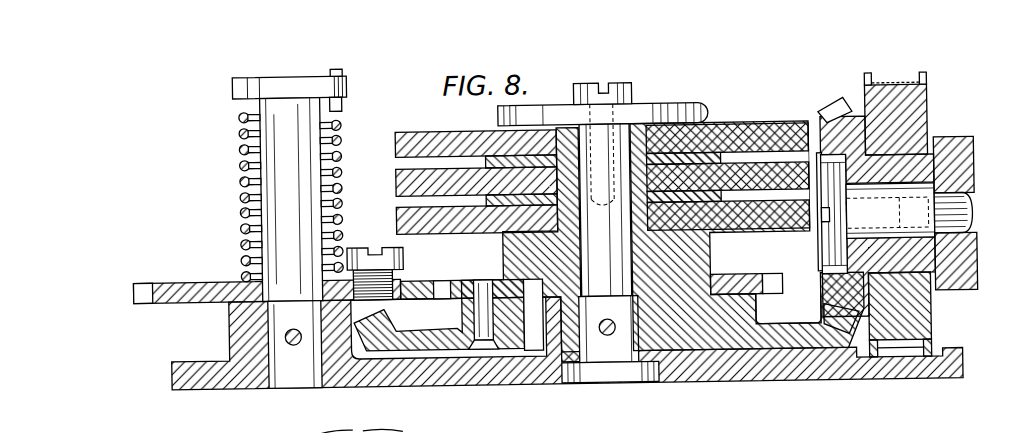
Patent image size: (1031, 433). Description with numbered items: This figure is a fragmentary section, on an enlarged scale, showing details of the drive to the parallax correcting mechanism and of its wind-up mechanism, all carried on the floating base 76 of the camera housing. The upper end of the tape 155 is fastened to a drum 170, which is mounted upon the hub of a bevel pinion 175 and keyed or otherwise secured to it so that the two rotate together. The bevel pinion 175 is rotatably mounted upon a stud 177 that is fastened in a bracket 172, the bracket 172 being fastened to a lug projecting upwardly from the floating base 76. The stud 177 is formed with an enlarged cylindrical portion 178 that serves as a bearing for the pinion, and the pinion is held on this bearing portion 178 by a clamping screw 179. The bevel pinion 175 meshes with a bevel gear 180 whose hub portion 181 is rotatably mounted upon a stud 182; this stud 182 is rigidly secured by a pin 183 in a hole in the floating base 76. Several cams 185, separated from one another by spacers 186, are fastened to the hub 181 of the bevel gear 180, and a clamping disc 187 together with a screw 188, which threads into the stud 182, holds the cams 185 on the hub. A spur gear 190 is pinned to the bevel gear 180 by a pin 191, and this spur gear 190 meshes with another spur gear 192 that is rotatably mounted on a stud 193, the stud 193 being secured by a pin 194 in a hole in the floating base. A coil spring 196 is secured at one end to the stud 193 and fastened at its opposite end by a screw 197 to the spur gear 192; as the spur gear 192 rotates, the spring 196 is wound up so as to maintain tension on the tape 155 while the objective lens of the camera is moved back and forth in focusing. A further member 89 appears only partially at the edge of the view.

The floating base 76 is at (724, 375).
The member (partially shown) 89 is at (389, 428).
The tape 155 is at (893, 87).
The drum 170 is at (912, 116).
The bracket 172 is at (963, 156).
The bevel pinion 175 is at (830, 116).
The stud 177 is at (960, 219).
The enlarged cylindrical portion 178 is at (902, 193).
The clamping screw 179 is at (832, 250).
The bevel gear 180 is at (796, 339).
The hub portion 181 is at (693, 258).
The stud 182 is at (596, 247).
The pin 183 is at (603, 338).
The cams 185 is at (395, 213).
The spacers 186 is at (708, 161).
The clamping disc 187 is at (700, 107).
The screw 188 is at (623, 84).
The spur gear 190 is at (728, 284).
The pin 191 is at (482, 309).
The spur gear 192 is at (193, 280).
The stud 193 is at (275, 312).
The pin 194 is at (293, 341).
The coil spring 196 is at (242, 115).
The screw 197 is at (393, 259).